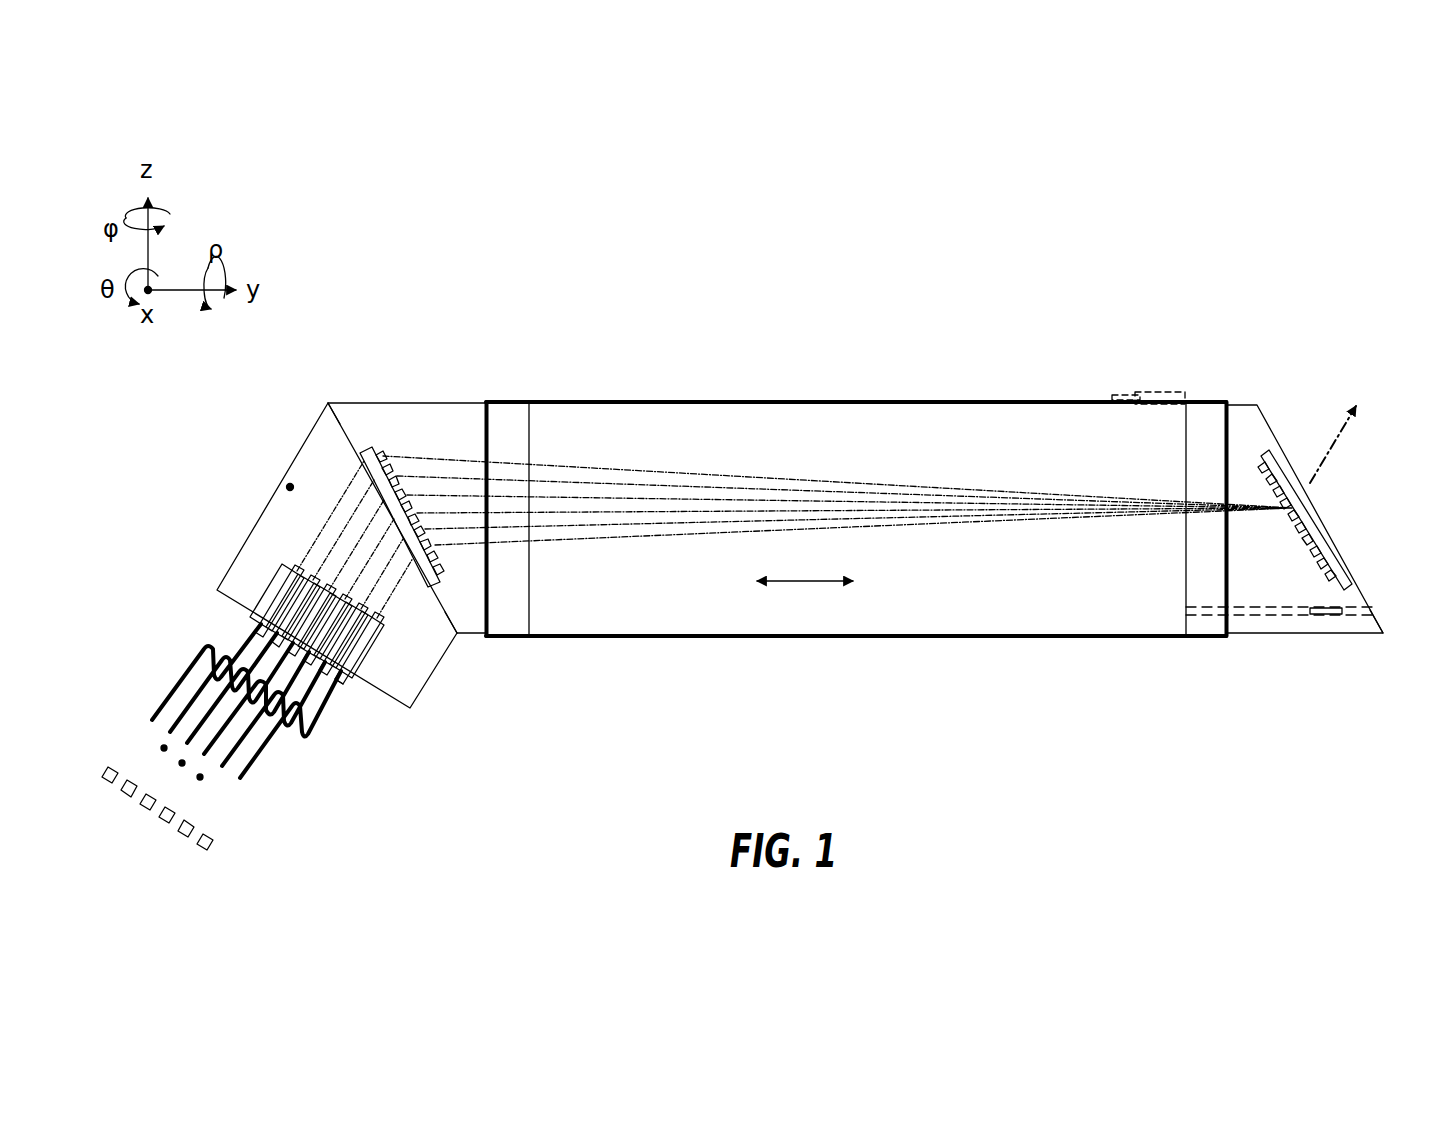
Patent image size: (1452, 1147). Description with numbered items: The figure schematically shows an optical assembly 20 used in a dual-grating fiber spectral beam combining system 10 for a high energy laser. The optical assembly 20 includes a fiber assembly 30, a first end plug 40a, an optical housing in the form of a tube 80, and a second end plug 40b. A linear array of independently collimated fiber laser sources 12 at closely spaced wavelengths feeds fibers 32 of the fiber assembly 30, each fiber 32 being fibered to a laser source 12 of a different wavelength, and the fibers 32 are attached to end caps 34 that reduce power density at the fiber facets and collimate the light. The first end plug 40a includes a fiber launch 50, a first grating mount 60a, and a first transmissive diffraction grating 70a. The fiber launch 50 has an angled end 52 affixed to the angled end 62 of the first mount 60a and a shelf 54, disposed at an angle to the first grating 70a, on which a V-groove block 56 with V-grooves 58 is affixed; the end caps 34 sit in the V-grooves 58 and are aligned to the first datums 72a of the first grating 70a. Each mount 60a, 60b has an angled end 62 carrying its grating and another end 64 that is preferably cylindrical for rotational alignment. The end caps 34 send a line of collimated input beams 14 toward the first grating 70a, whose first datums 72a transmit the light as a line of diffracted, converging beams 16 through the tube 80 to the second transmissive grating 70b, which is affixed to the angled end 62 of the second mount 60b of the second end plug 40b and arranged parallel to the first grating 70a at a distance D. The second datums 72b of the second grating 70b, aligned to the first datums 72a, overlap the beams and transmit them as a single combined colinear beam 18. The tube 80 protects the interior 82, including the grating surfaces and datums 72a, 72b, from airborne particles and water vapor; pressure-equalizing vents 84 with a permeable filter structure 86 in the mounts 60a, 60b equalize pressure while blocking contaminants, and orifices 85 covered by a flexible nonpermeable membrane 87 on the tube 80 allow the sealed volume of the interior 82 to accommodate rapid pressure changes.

The spectral beam combining system 10 is at (390, 236).
The fiber laser sources 12 is at (141, 835).
The input beams 14 is at (322, 496).
The diffracted beams 16 is at (640, 454).
The combined beam 18 is at (1322, 396).
The optical assembly 20 is at (575, 361).
The fiber assembly 30 is at (144, 686).
The fibers 32 is at (190, 664).
The end caps 34 is at (362, 668).
The first end plug 40a is at (196, 478).
The second end plug 40b is at (1370, 508).
The fiber launch 50 is at (250, 535).
The angled end of fiber launch 52 is at (330, 403).
The shelf 54 is at (287, 485).
The V-groove block 56 is at (278, 570).
The V-grooves 58 is at (262, 600).
The first grating mount 60a is at (467, 403).
The second grating mount 60b is at (1260, 635).
The angled end 62 is at (455, 634).
The mount end 64 is at (530, 640).
The first transmissive diffraction grating 70a is at (363, 450).
The second transmissive diffraction grating 70b is at (1352, 573).
The first datums 72a is at (392, 467).
The second datums 72b is at (1307, 530).
The optical housing tube 80 is at (845, 400).
The interior 82 is at (864, 633).
The pressure-equalizing vents 84 is at (1372, 607).
The orifices 85 is at (1136, 394).
The permeable filter structure 86 is at (1330, 617).
The nonpermeable membrane 87 is at (1157, 392).